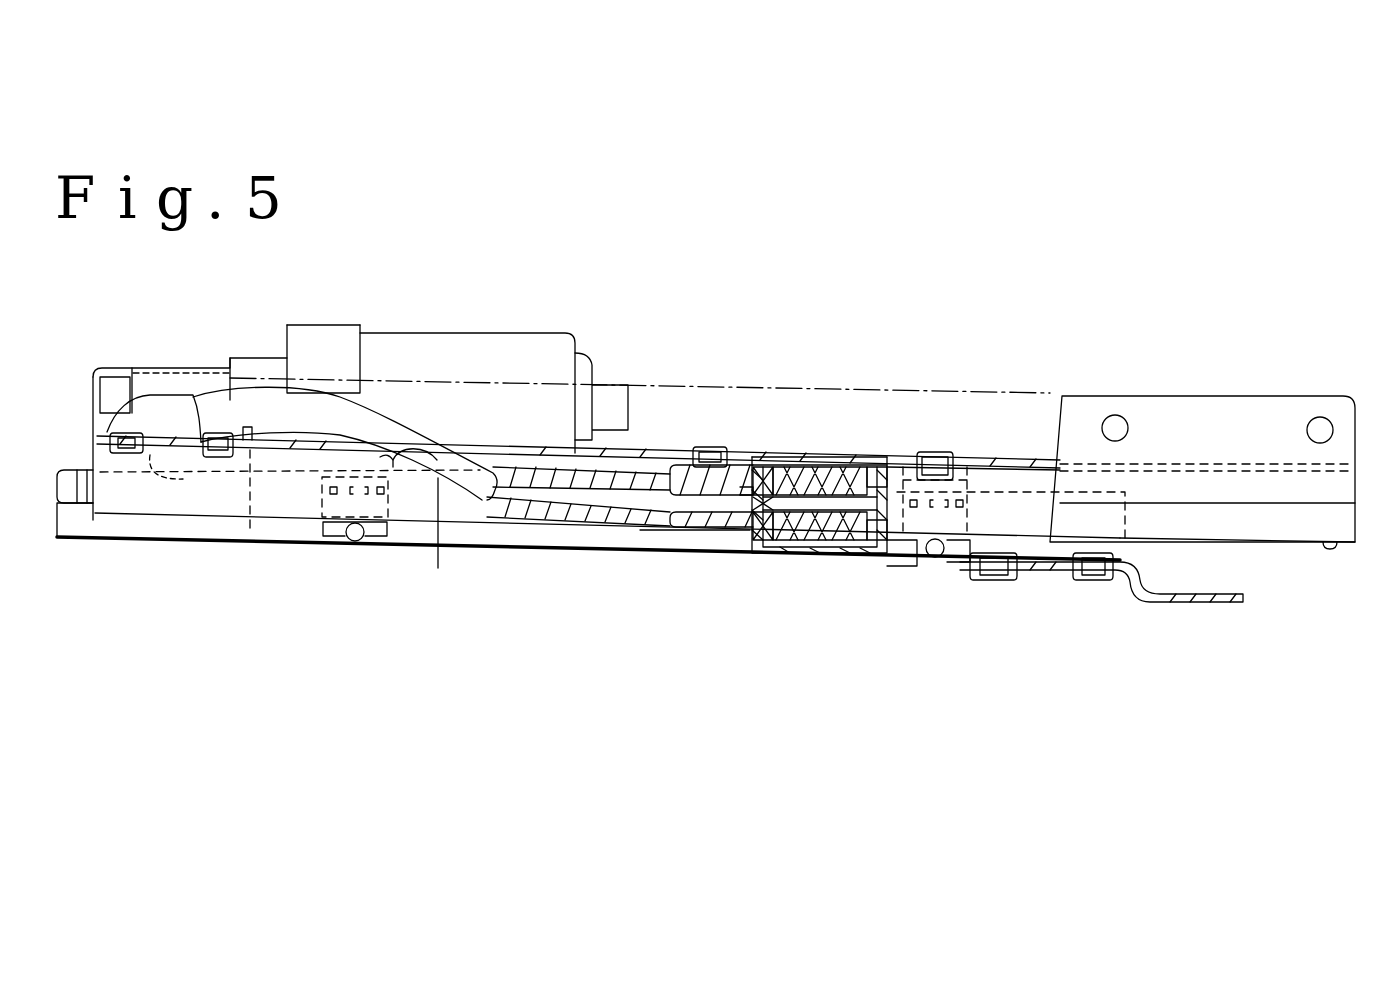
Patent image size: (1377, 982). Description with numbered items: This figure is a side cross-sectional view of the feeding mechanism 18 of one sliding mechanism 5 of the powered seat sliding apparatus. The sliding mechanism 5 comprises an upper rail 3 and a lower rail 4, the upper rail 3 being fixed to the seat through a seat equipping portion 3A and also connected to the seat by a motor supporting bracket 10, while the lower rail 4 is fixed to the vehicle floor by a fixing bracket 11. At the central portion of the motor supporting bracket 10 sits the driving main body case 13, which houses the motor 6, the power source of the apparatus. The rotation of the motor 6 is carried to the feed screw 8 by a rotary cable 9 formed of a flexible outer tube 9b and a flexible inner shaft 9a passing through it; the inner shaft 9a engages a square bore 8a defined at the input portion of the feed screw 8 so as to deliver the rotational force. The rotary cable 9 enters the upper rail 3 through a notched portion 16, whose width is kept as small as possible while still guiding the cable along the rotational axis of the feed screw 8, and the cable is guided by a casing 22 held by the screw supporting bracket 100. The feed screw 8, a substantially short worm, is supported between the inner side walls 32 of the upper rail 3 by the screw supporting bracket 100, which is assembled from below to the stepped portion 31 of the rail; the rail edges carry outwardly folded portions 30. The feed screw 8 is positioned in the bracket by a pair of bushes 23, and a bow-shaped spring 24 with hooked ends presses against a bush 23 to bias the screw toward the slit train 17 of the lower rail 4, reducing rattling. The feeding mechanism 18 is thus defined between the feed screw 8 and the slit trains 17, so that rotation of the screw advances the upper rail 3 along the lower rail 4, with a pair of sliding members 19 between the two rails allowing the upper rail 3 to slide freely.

The sliding mechanism 5 is at (1044, 257).
The motor 6 is at (525, 340).
The rotary cable 9 is at (337, 395).
The inner shaft 9a is at (513, 500).
The outer tube 9b is at (410, 428).
The motor supporting bracket 10 is at (185, 458).
The driving main body case 13 is at (153, 407).
The slit train 17 is at (83, 466).
The sliding member 19 is at (353, 548).
The notched portion 16 is at (435, 543).
The lower rail 4 is at (567, 558).
The casing 22 is at (698, 533).
The screw supporting bracket 100 is at (748, 545).
The feeding mechanism 18 is at (813, 423).
The feed screw 8 is at (838, 532).
The square bore 8a is at (789, 550).
The bush 23 is at (757, 460).
The spring 24 is at (883, 462).
The stepped portion 31 is at (640, 449).
The inner side wall 32 is at (1003, 514).
The upper rail 3 is at (1268, 548).
The seat equipping portion 3A is at (1116, 414).
The folded portion 30 is at (1162, 541).
The fixing bracket 11 is at (1227, 603).